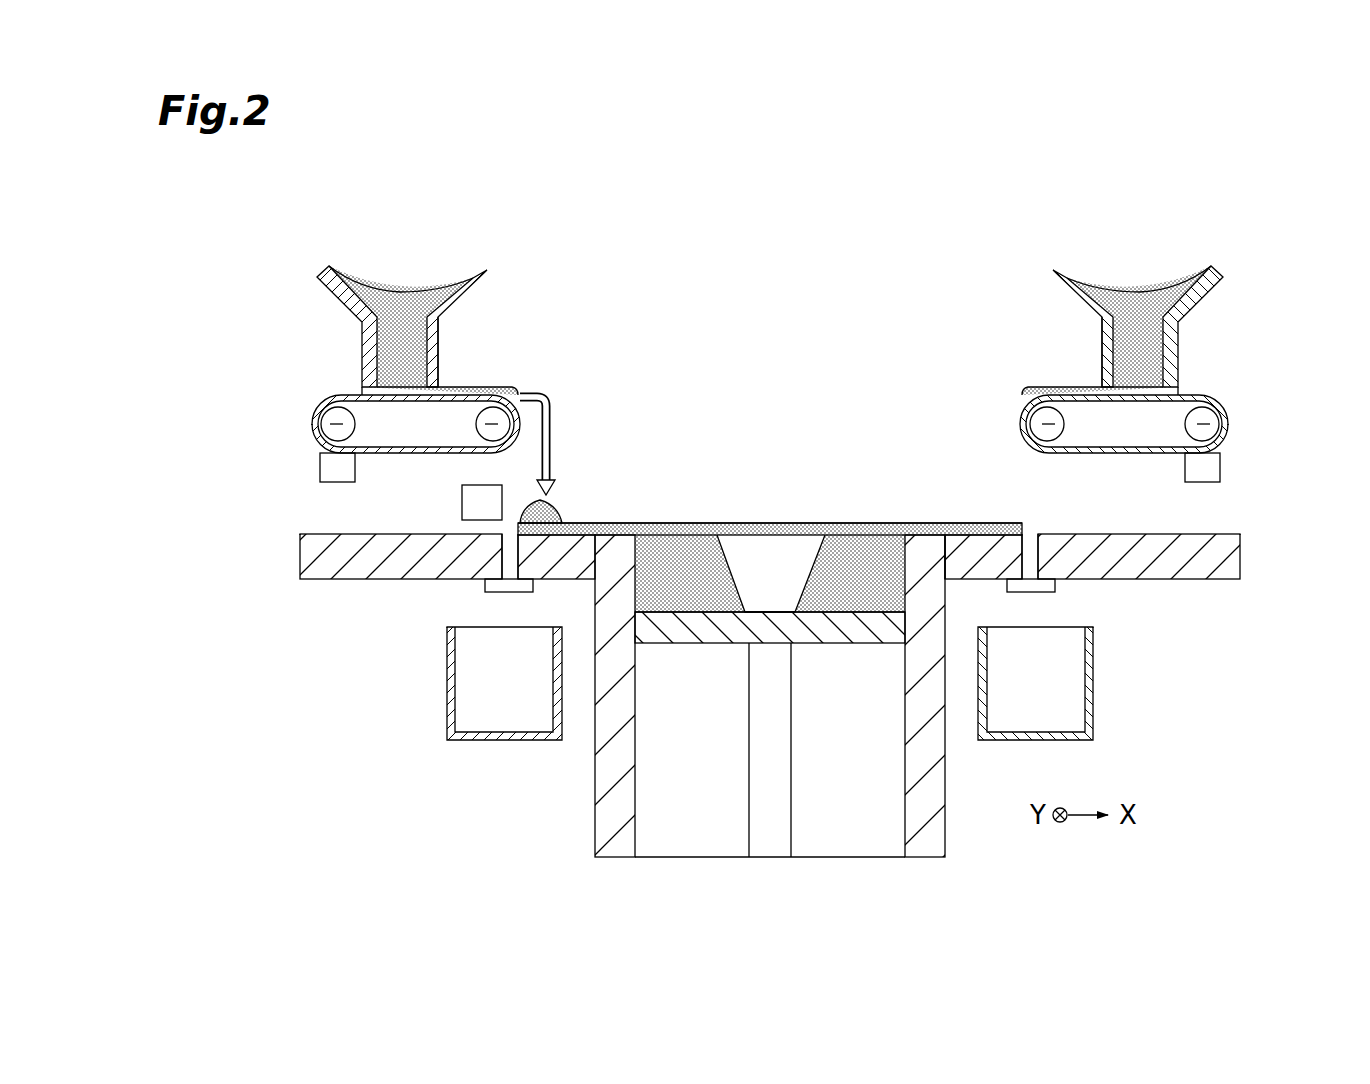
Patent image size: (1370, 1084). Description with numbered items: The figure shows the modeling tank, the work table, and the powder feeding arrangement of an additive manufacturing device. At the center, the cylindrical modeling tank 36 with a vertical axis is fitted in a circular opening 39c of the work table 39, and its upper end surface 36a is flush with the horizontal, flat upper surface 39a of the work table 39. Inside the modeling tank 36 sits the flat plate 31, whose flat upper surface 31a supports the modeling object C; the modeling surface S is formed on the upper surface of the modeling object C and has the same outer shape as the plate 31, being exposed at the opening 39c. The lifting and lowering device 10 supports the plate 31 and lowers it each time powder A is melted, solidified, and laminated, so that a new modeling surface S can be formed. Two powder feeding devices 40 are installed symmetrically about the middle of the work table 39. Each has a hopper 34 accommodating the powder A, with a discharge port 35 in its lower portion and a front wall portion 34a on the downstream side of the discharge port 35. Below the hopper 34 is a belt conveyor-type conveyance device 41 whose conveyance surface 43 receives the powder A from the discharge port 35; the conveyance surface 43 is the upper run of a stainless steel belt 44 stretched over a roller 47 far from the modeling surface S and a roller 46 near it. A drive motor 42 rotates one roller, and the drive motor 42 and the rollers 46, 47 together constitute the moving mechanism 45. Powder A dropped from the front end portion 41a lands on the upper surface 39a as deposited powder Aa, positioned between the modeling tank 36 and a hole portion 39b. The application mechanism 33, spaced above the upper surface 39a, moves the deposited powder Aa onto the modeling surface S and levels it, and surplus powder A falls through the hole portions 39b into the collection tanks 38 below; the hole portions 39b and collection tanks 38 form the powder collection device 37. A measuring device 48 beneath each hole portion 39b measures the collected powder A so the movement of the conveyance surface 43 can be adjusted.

The lifting and lowering device 10 is at (815, 832).
The plate 31 is at (685, 645).
The upper surface 31a is at (710, 610).
The application mechanism 33 is at (462, 500).
The hopper 34 is at (353, 263).
The front wall portion 34a is at (440, 378).
The discharge port 35 is at (388, 345).
The modeling tank 36 is at (595, 797).
The upper end surface 36a is at (905, 530).
The powder collection device 37 is at (398, 664).
The collection tank 38 is at (447, 705).
The work table 39 is at (372, 570).
The upper surface 39a is at (588, 523).
The hole portion 39b is at (512, 560).
The opening 39c is at (935, 570).
The powder feeding device 40 is at (276, 341).
The conveyance device 41 is at (297, 418).
The front end portion 41a is at (512, 382).
The drive motor 42 is at (320, 470).
The conveyance surface 43 is at (462, 398).
The belt 44 is at (338, 389).
The moving mechanism 45 is at (291, 504).
The roller 46 is at (484, 434).
The roller 47 is at (323, 430).
The measuring device 48 is at (482, 588).
The powder A is at (410, 284).
The deposited powder Aa is at (560, 514).
The modeling object C is at (778, 555).
The modeling surface S is at (853, 530).